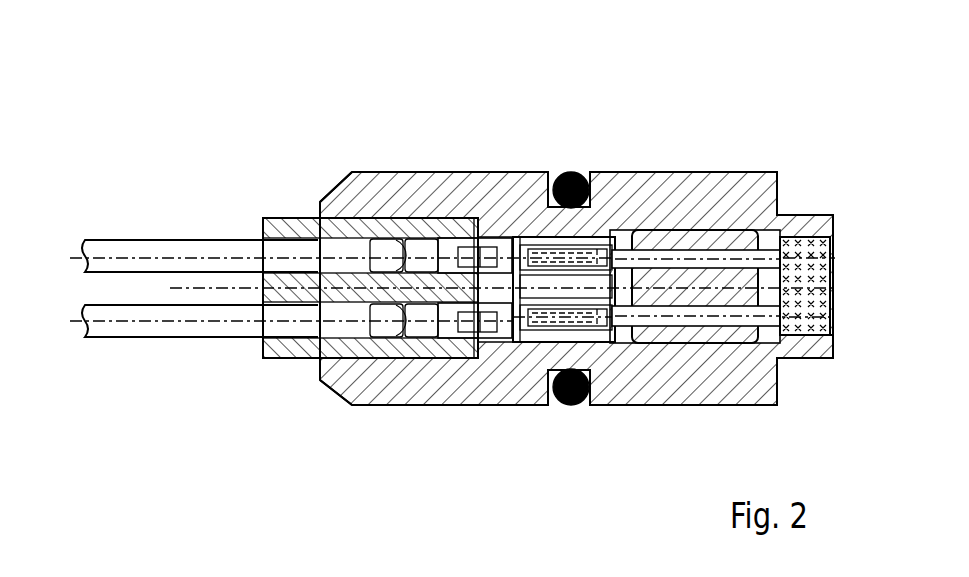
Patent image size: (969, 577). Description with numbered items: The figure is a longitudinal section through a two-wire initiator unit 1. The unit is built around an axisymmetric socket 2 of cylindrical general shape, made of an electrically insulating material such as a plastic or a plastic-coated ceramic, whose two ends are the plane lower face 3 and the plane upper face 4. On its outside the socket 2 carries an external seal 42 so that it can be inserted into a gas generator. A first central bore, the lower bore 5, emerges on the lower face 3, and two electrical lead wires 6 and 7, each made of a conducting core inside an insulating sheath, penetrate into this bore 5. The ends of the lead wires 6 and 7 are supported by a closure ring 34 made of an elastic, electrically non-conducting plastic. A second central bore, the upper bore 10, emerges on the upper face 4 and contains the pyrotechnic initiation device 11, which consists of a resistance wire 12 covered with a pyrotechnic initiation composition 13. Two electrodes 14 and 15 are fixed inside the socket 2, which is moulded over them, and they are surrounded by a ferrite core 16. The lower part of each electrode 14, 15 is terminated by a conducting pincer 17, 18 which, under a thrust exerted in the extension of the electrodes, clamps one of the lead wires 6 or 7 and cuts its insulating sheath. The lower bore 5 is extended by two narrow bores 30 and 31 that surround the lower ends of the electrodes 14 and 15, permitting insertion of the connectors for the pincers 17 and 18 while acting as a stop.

The two-wire initiator unit 1 is at (672, 143).
The socket 2 is at (413, 185).
The lower plane face 3 is at (318, 204).
The upper plane face 4 is at (835, 222).
The lower bore 5 is at (490, 233).
The first electrical lead wire 6 is at (133, 257).
The second electrical lead wire 7 is at (148, 328).
The upper bore 10 is at (822, 340).
The pyrotechnic initiation device 11 is at (845, 280).
The resistance wire 12 is at (793, 303).
The pyrotechnic initiation composition 13 is at (837, 253).
The first electrode 14 is at (695, 253).
The second electrode 15 is at (712, 325).
The ferrite core 16 is at (667, 342).
The first conducting pincer 17 is at (448, 322).
The second conducting pincer 18 is at (447, 258).
The first narrow bore 30 is at (580, 230).
The second narrow bore 31 is at (597, 340).
The closure ring 34 is at (293, 347).
The external seal 42 is at (577, 172).